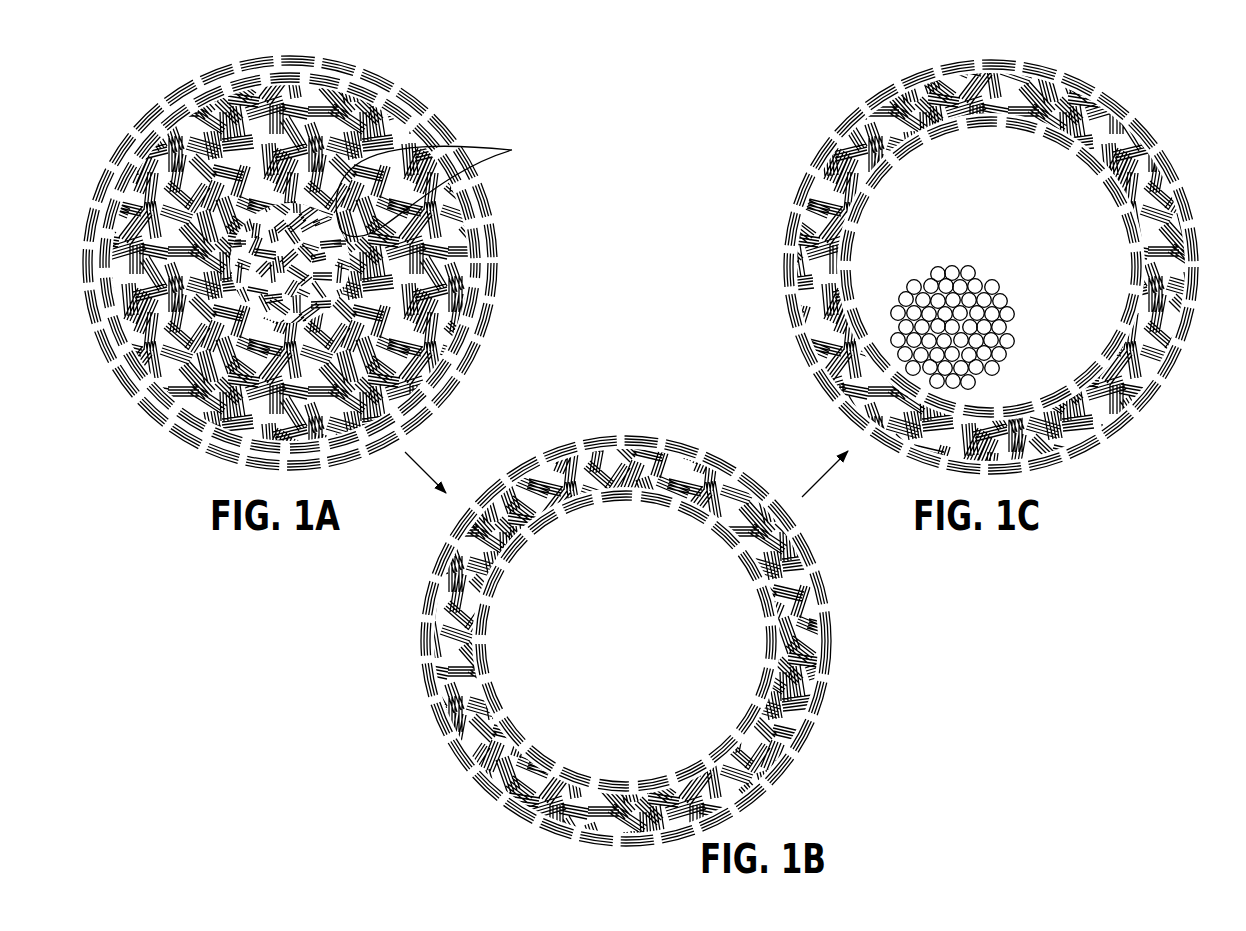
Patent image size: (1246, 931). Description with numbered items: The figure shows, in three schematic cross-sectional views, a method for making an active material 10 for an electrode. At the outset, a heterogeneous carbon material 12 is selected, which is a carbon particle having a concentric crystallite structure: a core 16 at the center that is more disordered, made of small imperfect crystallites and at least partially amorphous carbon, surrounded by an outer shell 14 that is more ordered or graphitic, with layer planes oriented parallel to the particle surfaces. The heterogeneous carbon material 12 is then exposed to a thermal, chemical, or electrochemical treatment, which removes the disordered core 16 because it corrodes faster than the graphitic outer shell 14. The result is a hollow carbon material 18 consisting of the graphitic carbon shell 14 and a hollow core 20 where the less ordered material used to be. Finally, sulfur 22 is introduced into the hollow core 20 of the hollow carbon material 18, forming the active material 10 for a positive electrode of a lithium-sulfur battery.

In FIG. 1C, the active material 10 is at (1136, 92).
In FIG. 1A, the heterogeneous carbon material 12 is at (441, 91).
In FIG. 1A, the graphitic carbon outer shell 14 is at (496, 264).
In FIG. 1B, the graphitic carbon outer shell 14 is at (506, 472).
In FIG. 1C, the graphitic carbon outer shell 14 is at (805, 175).
In FIG. 1A, the amorphous carbon core 16 is at (440, 187).
In FIG. 1B, the hollow carbon material 18 is at (753, 451).
In FIG. 1B, the hollow core 20 is at (633, 655).
In FIG. 1C, the hollow core 20 is at (998, 228).
In FIG. 1C, the sulfur 22 is at (897, 303).